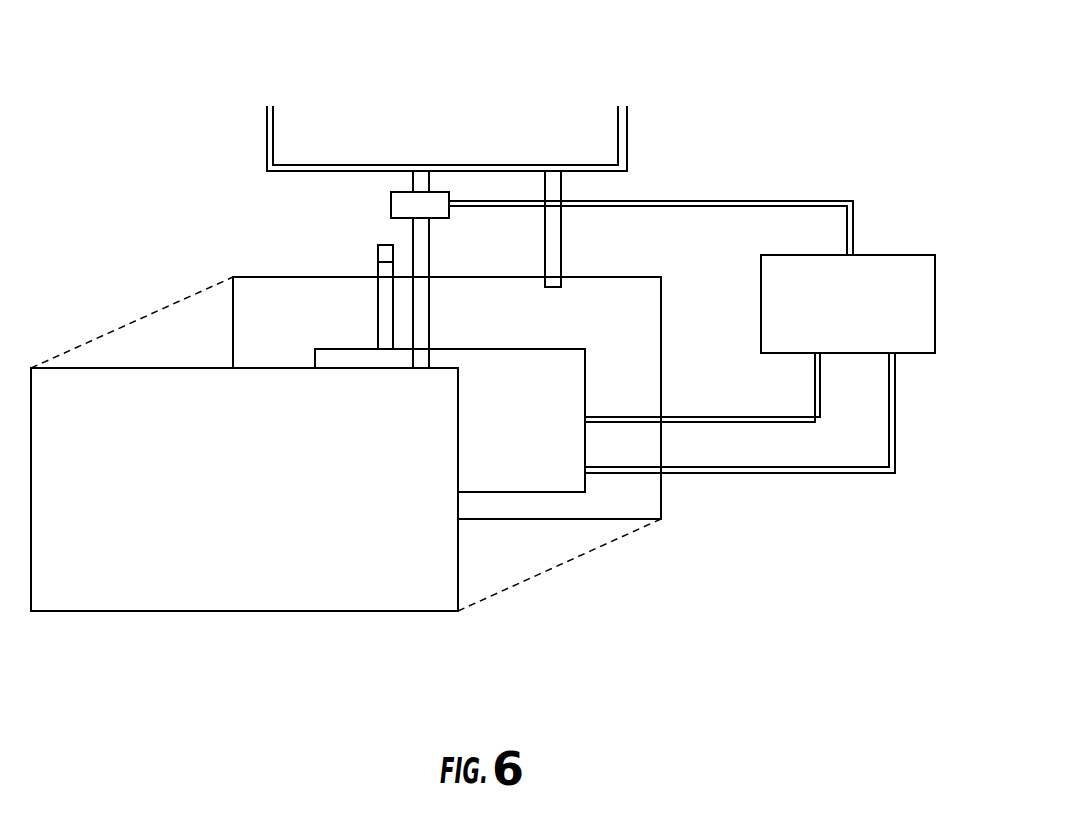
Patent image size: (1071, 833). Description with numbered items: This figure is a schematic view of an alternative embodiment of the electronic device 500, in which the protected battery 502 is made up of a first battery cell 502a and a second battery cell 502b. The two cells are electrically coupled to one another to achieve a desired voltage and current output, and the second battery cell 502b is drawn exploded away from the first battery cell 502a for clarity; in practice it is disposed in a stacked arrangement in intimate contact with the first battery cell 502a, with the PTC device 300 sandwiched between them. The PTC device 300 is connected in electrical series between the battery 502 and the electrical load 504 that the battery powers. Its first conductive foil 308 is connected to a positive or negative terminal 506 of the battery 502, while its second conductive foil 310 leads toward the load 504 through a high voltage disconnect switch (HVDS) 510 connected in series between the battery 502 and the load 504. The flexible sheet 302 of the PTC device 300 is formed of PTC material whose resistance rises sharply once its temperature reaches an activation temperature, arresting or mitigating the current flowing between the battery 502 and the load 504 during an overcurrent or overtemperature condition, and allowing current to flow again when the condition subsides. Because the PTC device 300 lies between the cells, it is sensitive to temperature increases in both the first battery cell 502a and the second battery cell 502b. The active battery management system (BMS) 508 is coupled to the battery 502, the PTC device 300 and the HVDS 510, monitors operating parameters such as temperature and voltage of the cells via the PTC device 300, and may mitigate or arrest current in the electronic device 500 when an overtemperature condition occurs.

The electronic device 500 is at (490, 337).
The electrical load 504 is at (592, 137).
The high voltage disconnect switch (HVDS) 510 is at (400, 213).
The terminal 506 is at (377, 255).
The first conductive foil 308 is at (377, 303).
The second conductive foil 310 is at (423, 272).
The battery 502 is at (233, 277).
The first battery cell 502a is at (602, 297).
The second battery cell 502b is at (123, 597).
The PTC device 300 is at (614, 490).
The flexible sheet 302 is at (556, 485).
The battery management system (BMS) 508 is at (887, 255).